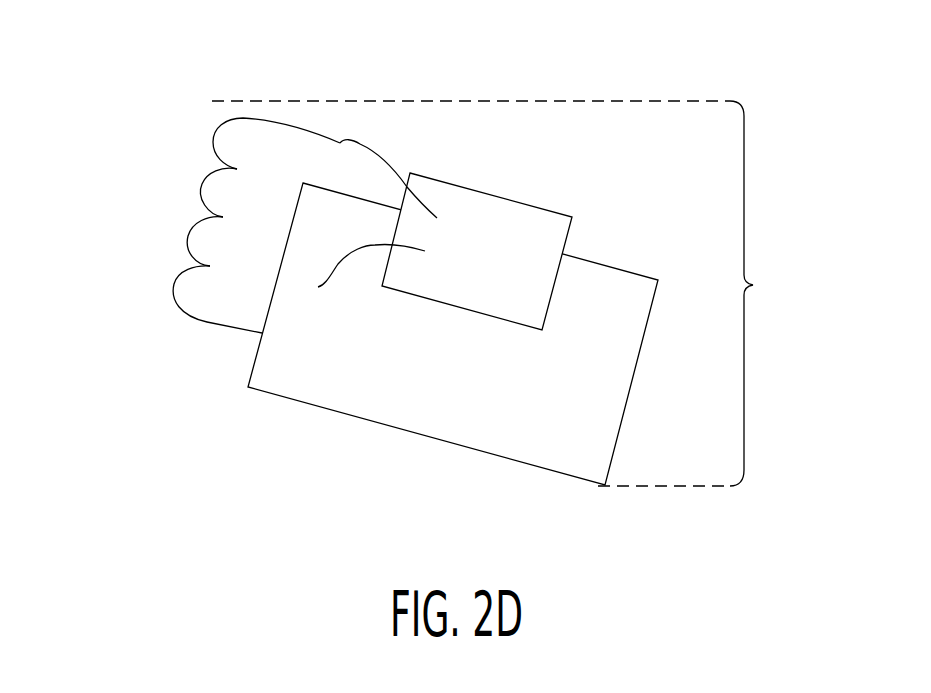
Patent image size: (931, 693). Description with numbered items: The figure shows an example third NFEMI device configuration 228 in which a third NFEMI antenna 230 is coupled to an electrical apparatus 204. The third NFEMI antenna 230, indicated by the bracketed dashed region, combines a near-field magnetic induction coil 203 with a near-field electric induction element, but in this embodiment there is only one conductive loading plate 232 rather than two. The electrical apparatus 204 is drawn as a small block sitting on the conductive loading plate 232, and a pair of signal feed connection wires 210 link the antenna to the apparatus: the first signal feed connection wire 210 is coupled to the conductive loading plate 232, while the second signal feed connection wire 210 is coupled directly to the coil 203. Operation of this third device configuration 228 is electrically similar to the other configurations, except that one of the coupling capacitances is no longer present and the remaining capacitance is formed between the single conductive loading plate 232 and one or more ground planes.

The third NFEMI device configuration 228 is at (146, 84).
The coil 203 is at (196, 219).
The electrical apparatus 204 is at (503, 282).
The signal feed connection wire 210 is at (390, 156).
The third NFEMI antenna 230 is at (505, 293).
The conductive loading plate 232 is at (571, 425).